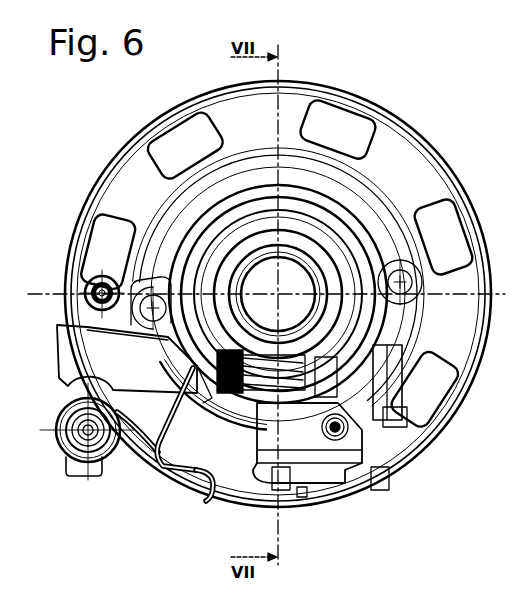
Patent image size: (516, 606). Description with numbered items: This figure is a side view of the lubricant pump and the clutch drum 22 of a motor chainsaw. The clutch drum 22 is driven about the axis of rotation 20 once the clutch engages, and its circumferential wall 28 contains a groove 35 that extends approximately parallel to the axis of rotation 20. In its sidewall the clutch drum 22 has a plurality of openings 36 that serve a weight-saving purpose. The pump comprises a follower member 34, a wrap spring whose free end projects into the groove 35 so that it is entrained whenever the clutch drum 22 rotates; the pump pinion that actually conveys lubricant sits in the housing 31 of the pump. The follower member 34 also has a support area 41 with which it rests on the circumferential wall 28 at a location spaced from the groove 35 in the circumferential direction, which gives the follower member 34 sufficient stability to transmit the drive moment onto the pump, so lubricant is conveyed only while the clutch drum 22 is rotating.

The axis of rotation 20 is at (281, 291).
The clutch drum 22 is at (452, 172).
The circumferential wall 28 is at (404, 466).
The housing 31 is at (72, 340).
The follower member 34 is at (147, 447).
The groove 35 is at (208, 496).
The openings 36 is at (332, 128).
The support area 41 is at (153, 470).